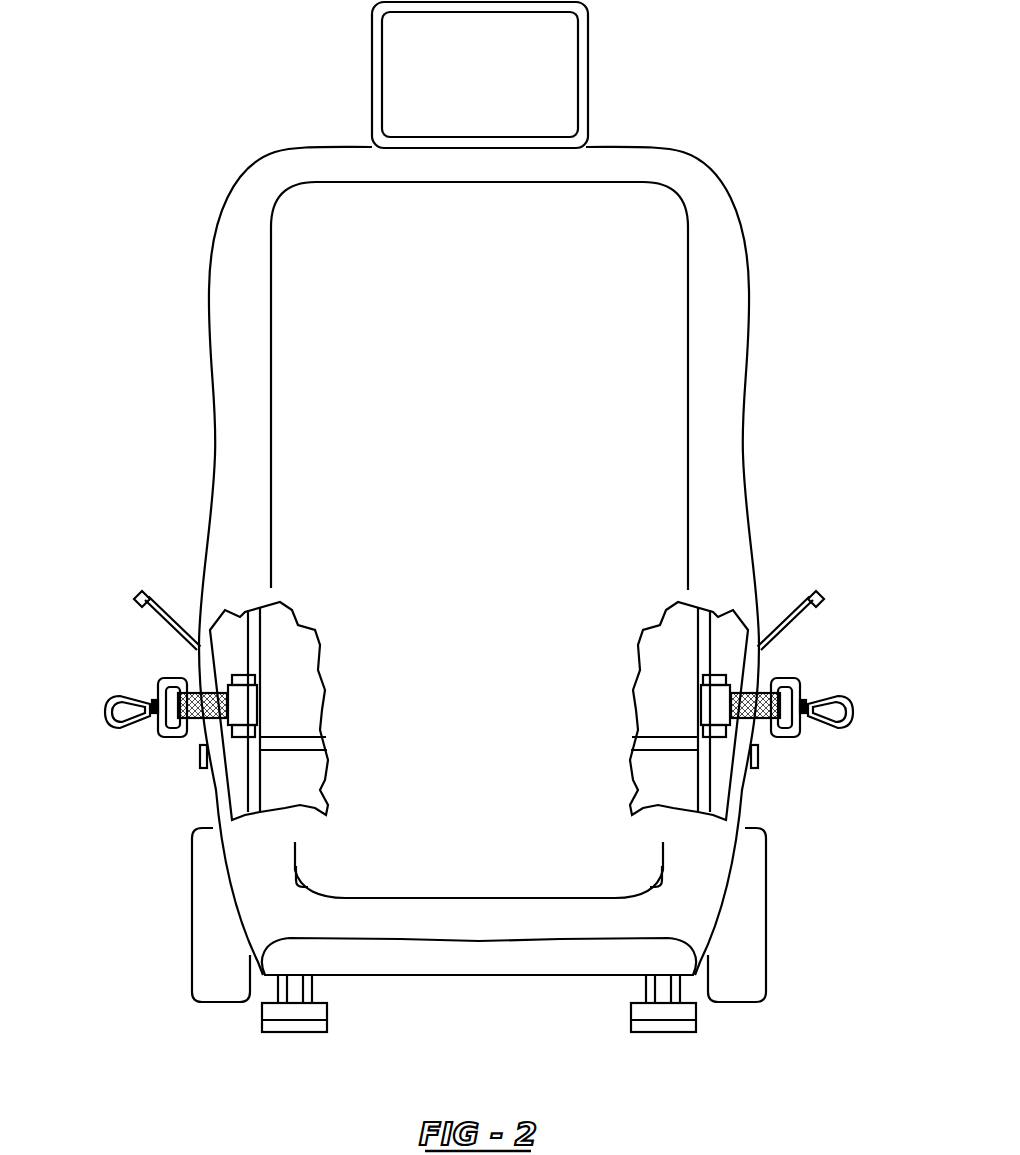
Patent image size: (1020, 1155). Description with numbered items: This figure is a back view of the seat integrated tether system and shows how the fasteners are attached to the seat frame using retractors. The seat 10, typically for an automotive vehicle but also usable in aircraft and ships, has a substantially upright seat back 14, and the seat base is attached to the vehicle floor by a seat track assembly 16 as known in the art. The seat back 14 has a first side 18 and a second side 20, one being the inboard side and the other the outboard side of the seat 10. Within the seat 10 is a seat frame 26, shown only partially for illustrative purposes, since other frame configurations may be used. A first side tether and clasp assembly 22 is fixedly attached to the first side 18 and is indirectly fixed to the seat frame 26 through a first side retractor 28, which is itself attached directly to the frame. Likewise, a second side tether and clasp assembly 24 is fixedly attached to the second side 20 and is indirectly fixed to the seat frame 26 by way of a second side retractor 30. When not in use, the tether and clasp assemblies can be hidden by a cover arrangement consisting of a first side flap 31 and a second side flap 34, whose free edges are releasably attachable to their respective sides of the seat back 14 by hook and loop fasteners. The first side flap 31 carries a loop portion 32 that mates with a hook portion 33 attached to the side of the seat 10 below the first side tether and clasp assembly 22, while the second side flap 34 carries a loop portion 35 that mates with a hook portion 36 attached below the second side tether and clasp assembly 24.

The seat 10 is at (132, 237).
The seat back 14 is at (723, 415).
The seat track assembly 16 is at (320, 1013).
The first side 18 is at (723, 295).
The second side 20 is at (225, 318).
The first side tether and clasp assembly 22 is at (767, 675).
The second side tether and clasp assembly 24 is at (158, 717).
The seat frame 26 is at (253, 788).
The first side retractor 28 is at (713, 713).
The second side retractor 30 is at (242, 705).
The first side flap 31 is at (812, 610).
The loop portion 32 is at (820, 612).
The hook portion 33 is at (758, 765).
The second side flap 34 is at (163, 607).
The loop portion 35 is at (142, 610).
The hook portion 36 is at (200, 770).